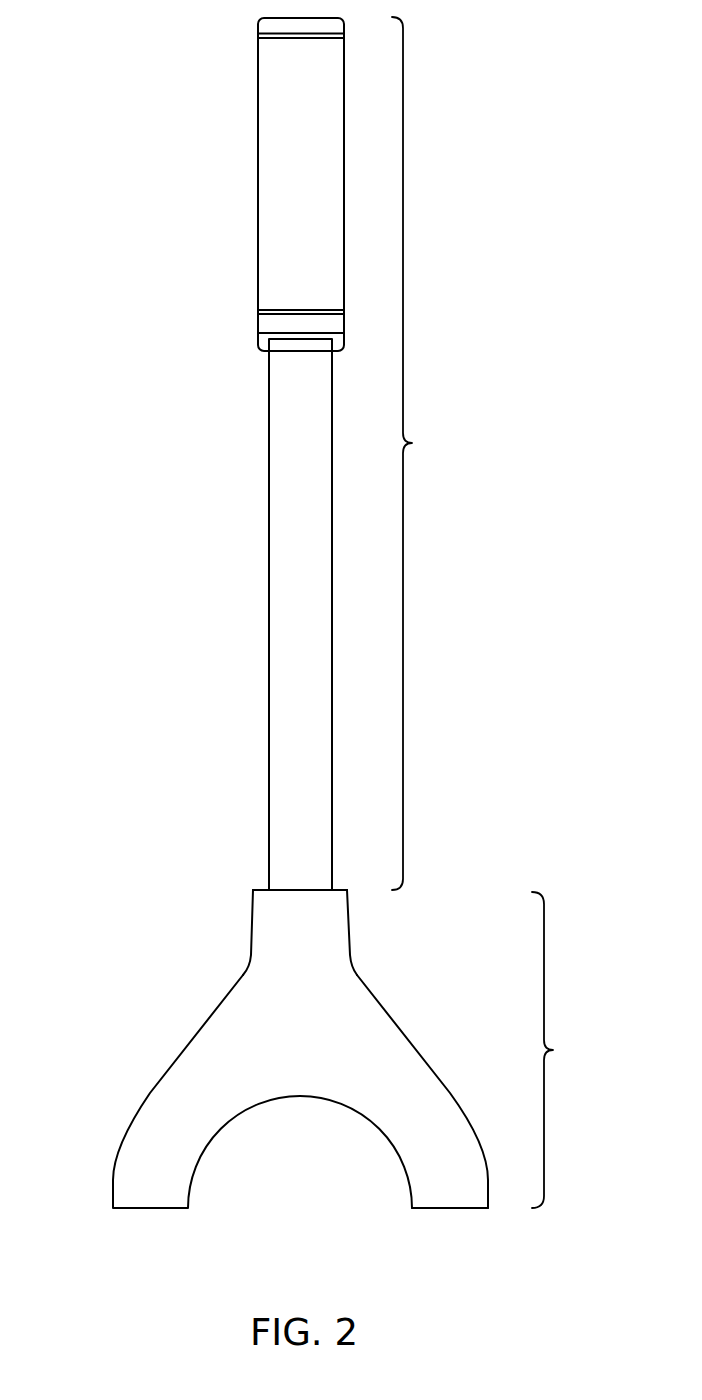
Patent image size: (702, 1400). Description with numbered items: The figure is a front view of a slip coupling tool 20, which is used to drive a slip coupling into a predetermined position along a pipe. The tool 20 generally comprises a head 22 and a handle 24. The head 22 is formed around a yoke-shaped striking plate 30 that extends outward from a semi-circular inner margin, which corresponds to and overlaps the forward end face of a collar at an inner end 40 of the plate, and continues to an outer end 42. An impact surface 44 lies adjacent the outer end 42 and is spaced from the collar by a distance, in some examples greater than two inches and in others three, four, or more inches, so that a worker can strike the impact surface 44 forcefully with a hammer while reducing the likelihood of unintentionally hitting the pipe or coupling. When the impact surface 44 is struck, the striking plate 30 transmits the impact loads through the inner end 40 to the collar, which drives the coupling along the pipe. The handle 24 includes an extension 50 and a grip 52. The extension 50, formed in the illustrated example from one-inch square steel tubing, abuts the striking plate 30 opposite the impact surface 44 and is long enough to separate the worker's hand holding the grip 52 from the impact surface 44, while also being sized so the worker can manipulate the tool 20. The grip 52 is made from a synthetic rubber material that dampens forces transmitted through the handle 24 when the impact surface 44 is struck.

The slip coupling tool 20 is at (104, 64).
The head 22 is at (560, 1050).
The handle 24 is at (420, 453).
The striking plate 30 is at (151, 1096).
The inner end 40 is at (458, 1209).
The outer end 42 is at (262, 888).
The impact surface 44 is at (314, 938).
The extension 50 is at (269, 614).
The grip 52 is at (258, 181).